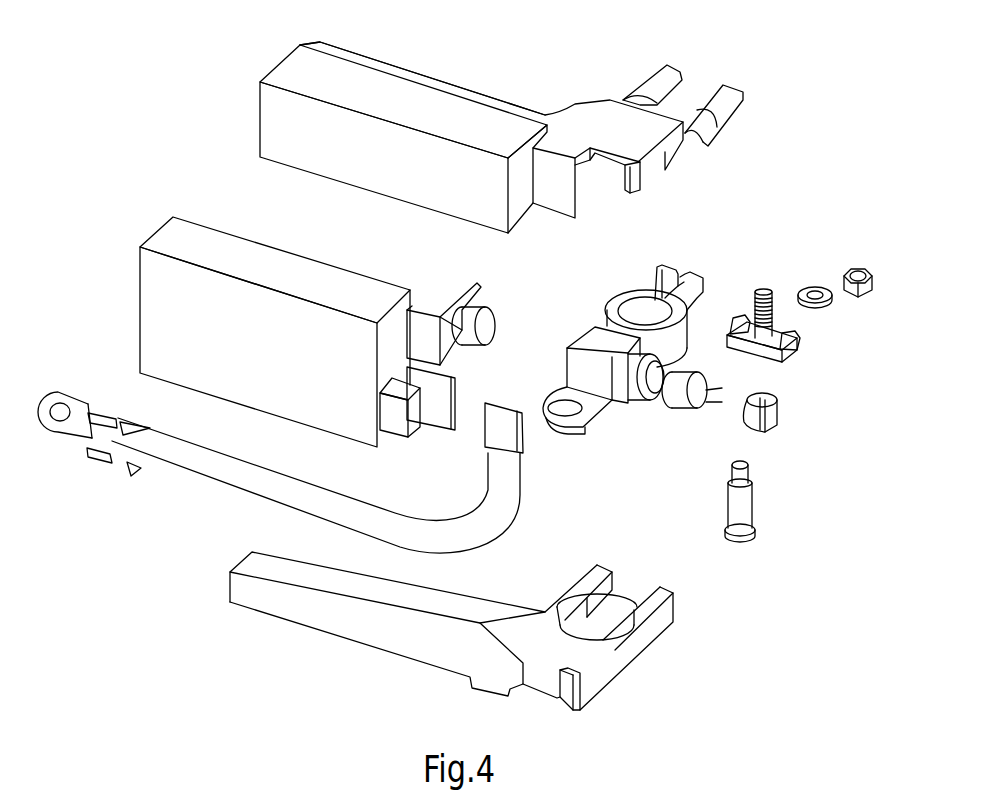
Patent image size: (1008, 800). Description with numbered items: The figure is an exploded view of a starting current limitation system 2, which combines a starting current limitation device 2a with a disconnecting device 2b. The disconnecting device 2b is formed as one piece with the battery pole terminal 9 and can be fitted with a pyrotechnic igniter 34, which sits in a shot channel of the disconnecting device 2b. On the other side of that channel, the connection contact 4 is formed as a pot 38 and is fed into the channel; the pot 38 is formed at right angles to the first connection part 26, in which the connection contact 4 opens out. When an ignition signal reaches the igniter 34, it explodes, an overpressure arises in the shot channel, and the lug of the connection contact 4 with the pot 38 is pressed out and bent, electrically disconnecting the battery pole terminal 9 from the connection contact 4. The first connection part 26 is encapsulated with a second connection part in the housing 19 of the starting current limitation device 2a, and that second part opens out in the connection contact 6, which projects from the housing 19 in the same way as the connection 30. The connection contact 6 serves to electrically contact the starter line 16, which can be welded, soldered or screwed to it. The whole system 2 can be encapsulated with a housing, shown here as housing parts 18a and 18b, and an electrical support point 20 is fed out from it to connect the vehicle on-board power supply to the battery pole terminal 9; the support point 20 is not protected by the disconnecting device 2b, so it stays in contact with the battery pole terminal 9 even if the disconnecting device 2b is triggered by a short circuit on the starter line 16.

The starting current limitation system 2 is at (742, 638).
The starting current limitation device 2a is at (243, 302).
The disconnecting device 2b is at (635, 385).
The connection contact 4 is at (477, 298).
The connection contact 6 is at (442, 413).
The battery pole terminal 9 is at (623, 344).
The starter line 16 is at (200, 467).
The housing 18a is at (290, 68).
The housing 18b is at (277, 602).
The housing 19 is at (163, 313).
The electrical support point 20 is at (742, 507).
The first connection part 26 is at (470, 304).
The connection 30 is at (400, 427).
The pyrotechnic igniter 34 is at (683, 408).
The pot 38 is at (490, 322).